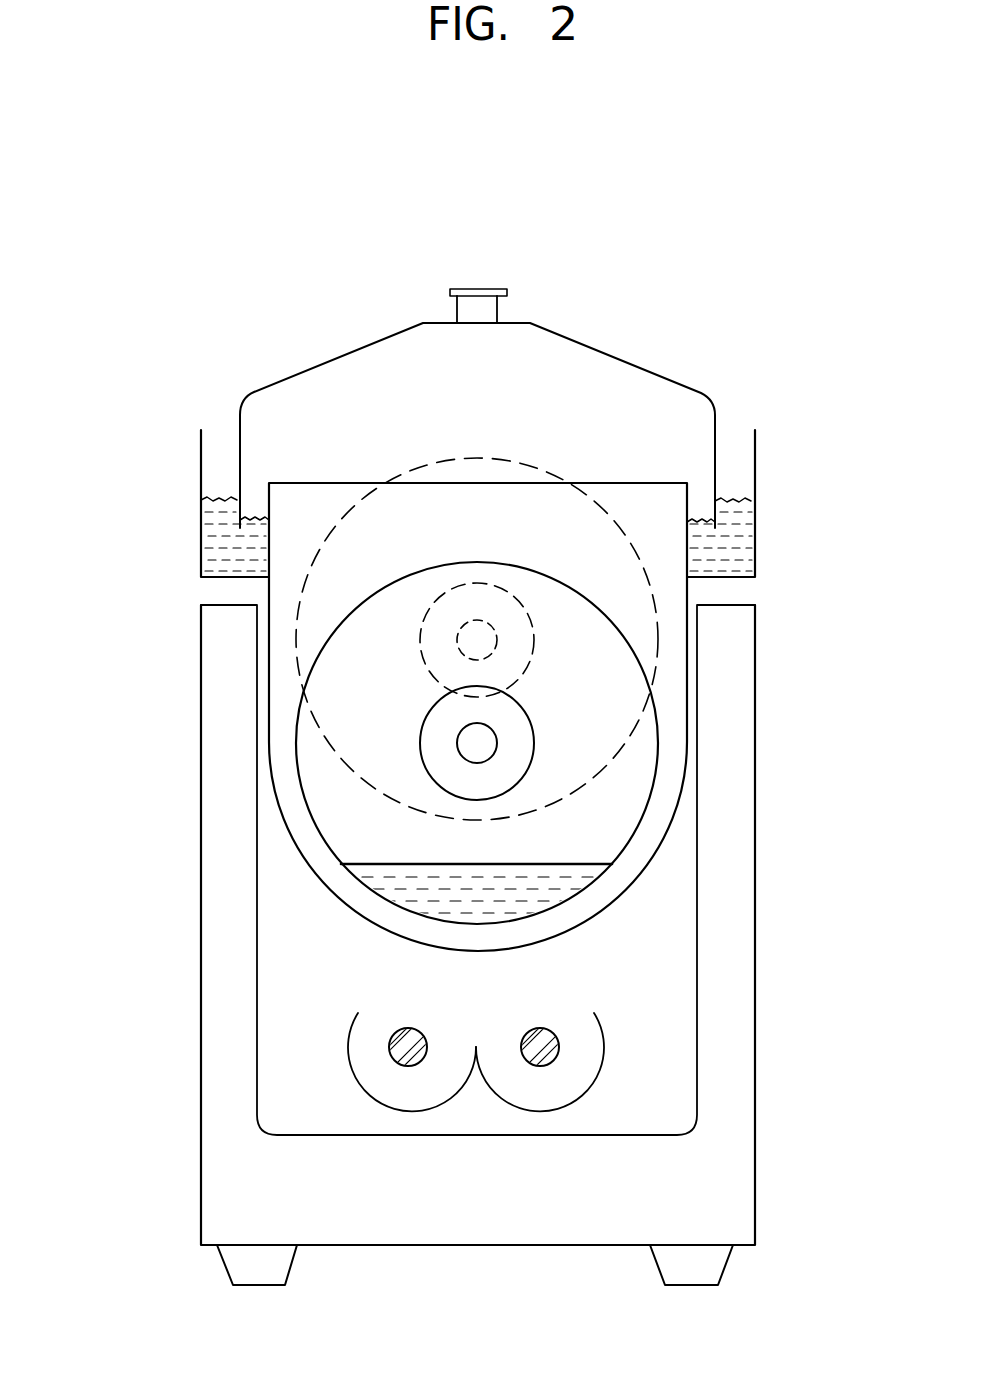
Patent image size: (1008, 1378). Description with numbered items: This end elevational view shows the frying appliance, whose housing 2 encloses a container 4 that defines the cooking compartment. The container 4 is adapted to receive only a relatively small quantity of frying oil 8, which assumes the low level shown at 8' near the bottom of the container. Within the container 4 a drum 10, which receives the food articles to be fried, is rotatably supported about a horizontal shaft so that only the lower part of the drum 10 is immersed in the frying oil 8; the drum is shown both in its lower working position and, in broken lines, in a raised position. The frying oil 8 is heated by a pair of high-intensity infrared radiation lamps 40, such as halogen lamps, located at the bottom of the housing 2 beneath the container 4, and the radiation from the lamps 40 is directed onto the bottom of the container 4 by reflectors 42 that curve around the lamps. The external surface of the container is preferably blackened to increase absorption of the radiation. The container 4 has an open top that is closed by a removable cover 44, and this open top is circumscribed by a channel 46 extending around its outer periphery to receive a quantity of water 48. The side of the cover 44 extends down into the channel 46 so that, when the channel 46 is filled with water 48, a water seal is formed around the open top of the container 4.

The housing 2 is at (188, 697).
The container 4 is at (320, 797).
The frying oil 8 is at (584, 825).
The oil level 8' is at (381, 901).
The drum 10 is at (650, 641).
The infrared radiation lamps 40 is at (413, 1060).
The reflectors 42 is at (448, 1100).
The removable cover 44 is at (630, 367).
The channel 46 is at (756, 449).
The water 48 is at (732, 547).